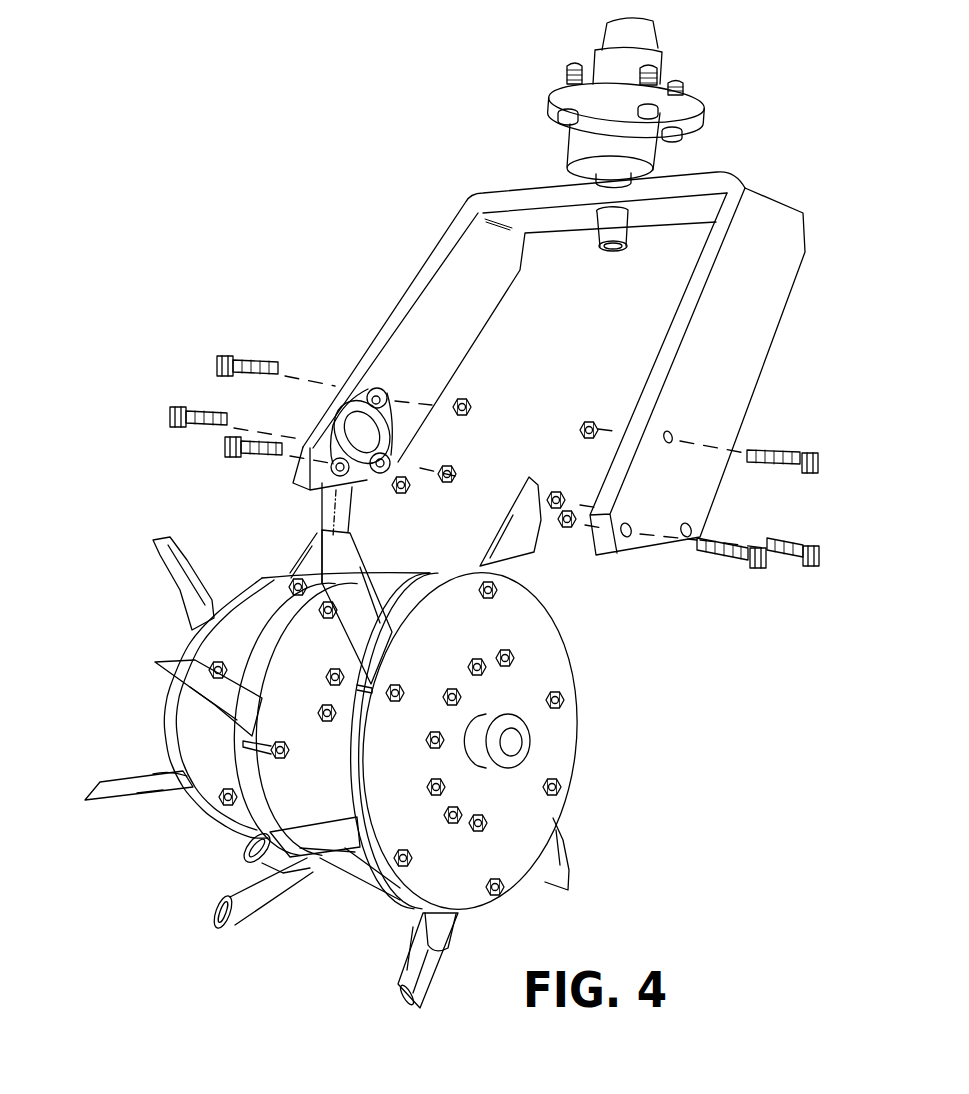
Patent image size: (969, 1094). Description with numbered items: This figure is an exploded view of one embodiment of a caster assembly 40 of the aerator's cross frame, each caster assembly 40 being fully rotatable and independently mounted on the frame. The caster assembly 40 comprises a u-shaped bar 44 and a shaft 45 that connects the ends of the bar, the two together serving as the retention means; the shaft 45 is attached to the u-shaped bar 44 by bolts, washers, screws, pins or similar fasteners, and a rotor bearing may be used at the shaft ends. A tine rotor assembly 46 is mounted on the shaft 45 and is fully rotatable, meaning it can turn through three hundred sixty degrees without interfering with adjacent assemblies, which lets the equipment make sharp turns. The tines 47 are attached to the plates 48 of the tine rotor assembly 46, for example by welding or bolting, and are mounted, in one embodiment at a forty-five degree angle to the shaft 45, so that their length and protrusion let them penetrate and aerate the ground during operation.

The caster assembly 40 is at (391, 281).
The u-shaped bar 44 is at (752, 344).
The shaft 45 is at (505, 713).
The tine rotor assembly 46 is at (579, 747).
The tines 47 is at (185, 573).
The plates 48 is at (548, 657).